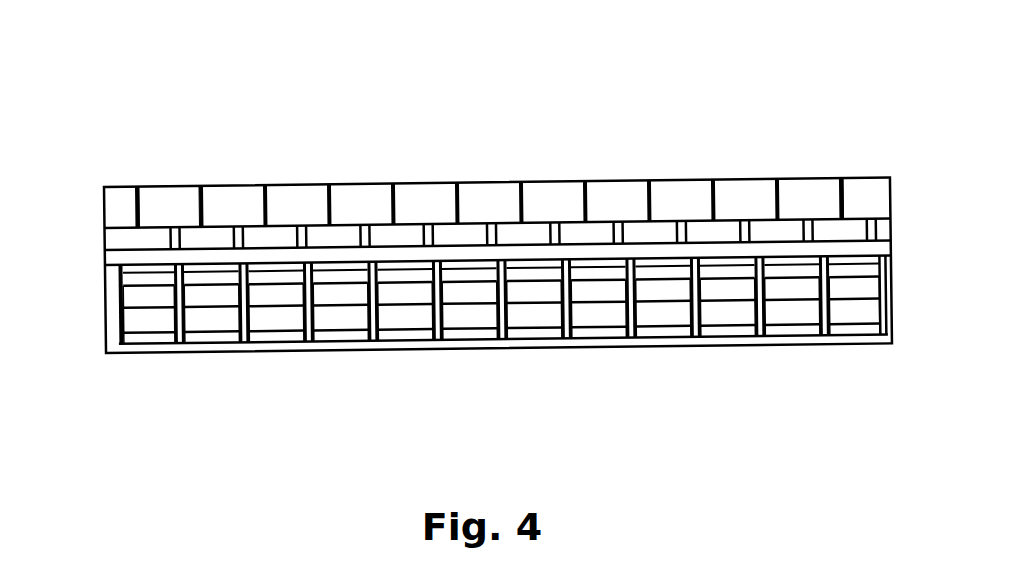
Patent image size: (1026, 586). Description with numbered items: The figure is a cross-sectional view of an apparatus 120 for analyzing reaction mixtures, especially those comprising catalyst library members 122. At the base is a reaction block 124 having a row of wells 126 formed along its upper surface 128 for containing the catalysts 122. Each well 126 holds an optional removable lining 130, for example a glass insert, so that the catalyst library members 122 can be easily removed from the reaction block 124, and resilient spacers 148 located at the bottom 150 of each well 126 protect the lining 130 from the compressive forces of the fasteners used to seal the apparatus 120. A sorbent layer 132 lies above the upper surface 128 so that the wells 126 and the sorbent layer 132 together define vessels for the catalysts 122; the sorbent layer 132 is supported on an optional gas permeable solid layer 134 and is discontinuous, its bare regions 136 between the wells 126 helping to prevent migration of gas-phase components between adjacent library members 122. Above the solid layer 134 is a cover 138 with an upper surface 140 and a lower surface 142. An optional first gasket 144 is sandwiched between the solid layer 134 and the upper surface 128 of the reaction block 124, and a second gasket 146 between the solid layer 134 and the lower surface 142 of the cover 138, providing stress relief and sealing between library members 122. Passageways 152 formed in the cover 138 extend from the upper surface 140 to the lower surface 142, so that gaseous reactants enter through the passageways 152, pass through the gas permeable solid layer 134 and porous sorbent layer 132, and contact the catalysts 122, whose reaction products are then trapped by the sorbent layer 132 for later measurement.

The apparatus 120 is at (808, 104).
The catalyst library members 122 is at (153, 325).
The reaction block 124 is at (876, 338).
The wells 126 is at (112, 280).
The upper surface 128 is at (498, 185).
The removable lining 130 is at (118, 321).
The sorbent layer 132 is at (266, 271).
The gas permeable solid layer 134 is at (868, 248).
The bare regions 136 is at (501, 265).
The cover 138 is at (860, 192).
The upper surface 140 is at (176, 187).
The lower surface 142 is at (891, 195).
The first gasket 144 is at (112, 265).
The second gasket 146 is at (113, 237).
The resilient spacers 148 is at (287, 333).
The bottom 150 is at (421, 340).
The passageways 152 is at (265, 186).